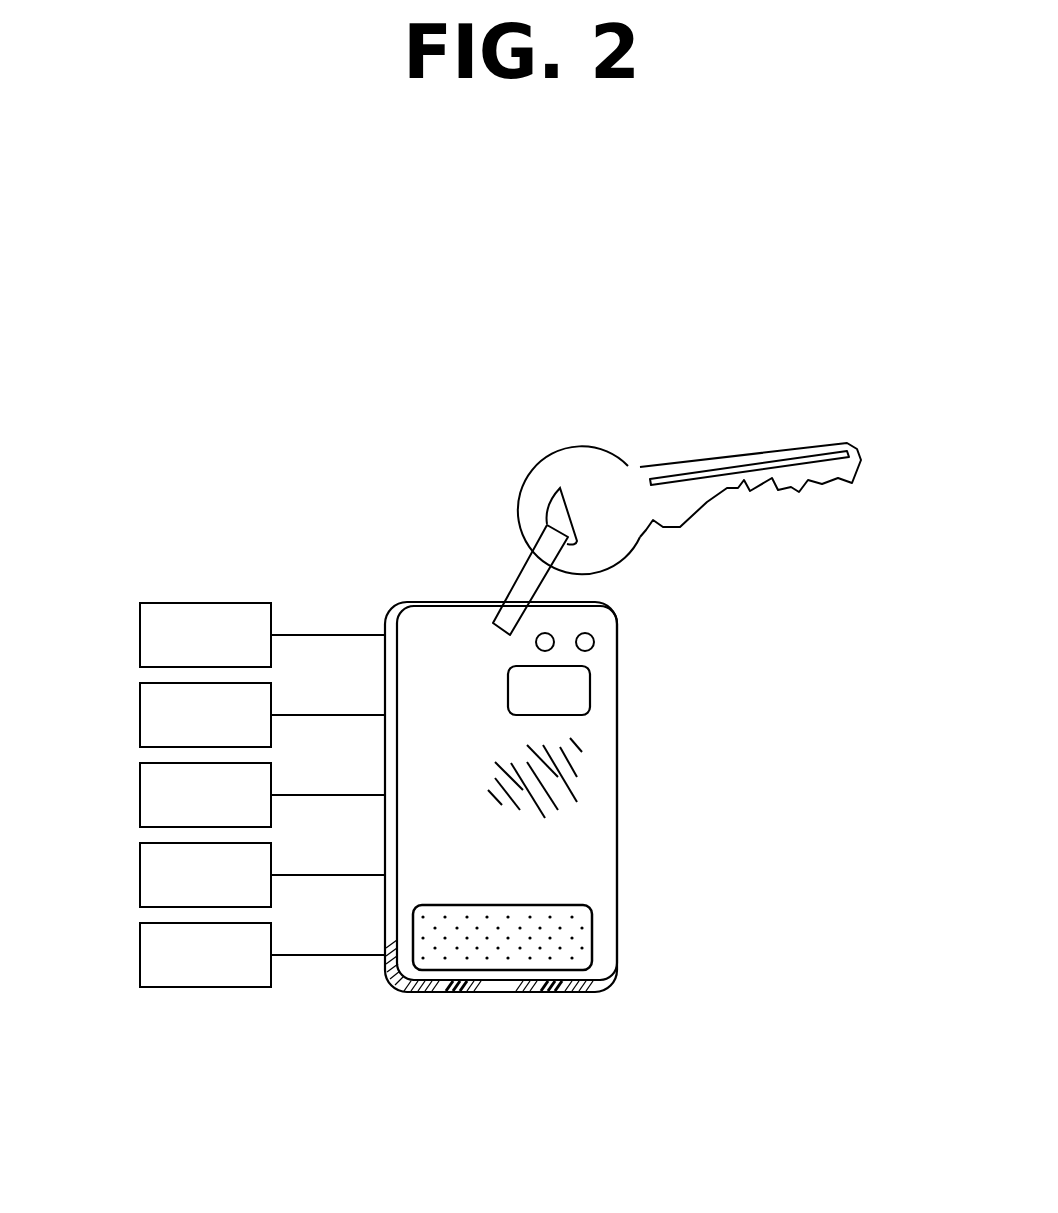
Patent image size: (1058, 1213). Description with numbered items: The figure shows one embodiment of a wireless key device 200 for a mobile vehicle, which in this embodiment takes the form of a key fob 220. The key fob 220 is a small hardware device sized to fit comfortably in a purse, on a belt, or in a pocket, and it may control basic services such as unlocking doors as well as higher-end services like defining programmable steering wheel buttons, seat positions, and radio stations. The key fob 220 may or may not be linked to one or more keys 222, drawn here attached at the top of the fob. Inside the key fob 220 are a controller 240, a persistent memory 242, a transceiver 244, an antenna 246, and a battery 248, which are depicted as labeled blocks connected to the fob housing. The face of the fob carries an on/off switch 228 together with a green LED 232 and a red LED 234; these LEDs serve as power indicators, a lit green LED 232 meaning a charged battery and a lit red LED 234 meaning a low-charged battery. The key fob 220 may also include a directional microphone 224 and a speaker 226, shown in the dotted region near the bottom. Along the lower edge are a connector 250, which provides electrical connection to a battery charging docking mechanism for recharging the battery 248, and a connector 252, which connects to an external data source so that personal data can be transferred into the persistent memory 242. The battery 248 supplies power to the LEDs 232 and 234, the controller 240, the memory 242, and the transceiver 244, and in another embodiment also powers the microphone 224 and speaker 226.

The key device 200 is at (108, 219).
The key fob 220 is at (800, 1036).
The key 222 is at (618, 452).
The directional microphone 224 is at (589, 918).
The speaker 226 is at (588, 952).
The on/off switch 228 is at (591, 689).
The LED 232 is at (547, 632).
The LED 234 is at (585, 632).
The controller 240 is at (262, 635).
The persistent memory 242 is at (262, 715).
The transceiver 244 is at (262, 795).
The antenna 246 is at (262, 875).
The battery 248 is at (262, 955).
The connector 250 is at (458, 992).
The connector 252 is at (555, 992).